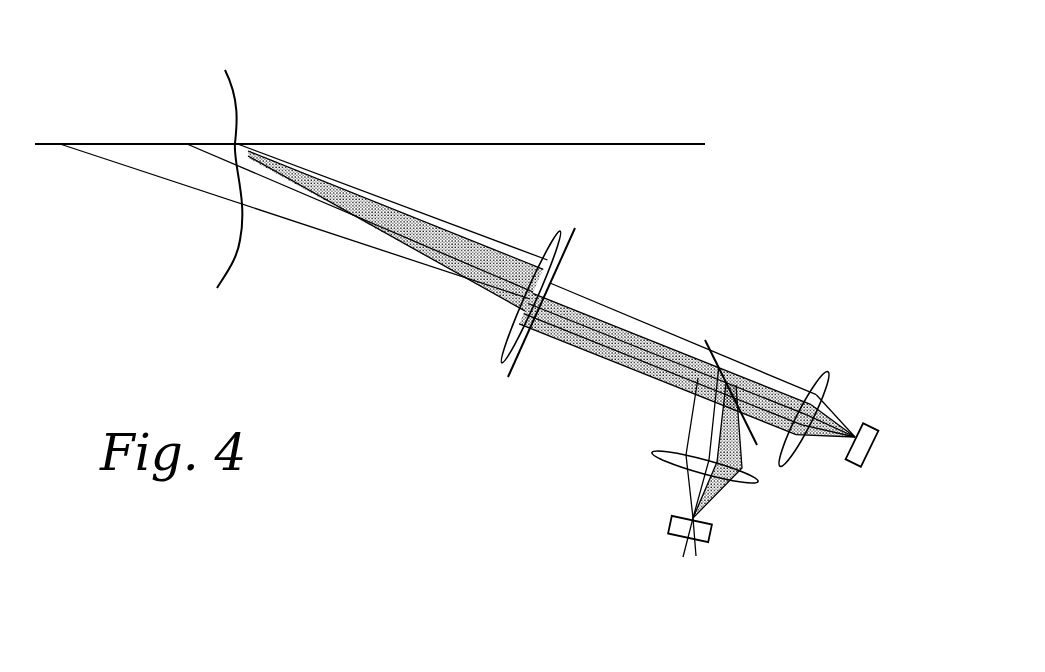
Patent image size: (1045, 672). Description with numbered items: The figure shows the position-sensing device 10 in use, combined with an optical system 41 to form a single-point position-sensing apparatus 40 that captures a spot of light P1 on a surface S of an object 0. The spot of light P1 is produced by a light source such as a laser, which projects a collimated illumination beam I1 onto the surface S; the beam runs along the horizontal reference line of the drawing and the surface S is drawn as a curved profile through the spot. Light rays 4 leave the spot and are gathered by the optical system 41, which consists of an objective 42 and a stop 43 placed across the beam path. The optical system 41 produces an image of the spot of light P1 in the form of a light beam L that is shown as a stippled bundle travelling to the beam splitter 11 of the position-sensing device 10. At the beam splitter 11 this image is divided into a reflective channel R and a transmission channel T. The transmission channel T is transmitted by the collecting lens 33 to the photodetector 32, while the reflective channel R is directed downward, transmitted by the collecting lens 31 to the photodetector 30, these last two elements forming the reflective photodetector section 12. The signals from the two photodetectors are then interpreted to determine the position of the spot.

The object 0 is at (280, 91).
The spot of light P1 is at (236, 143).
The illumination beam I1 is at (494, 144).
The surface S is at (233, 263).
The light rays 4 is at (285, 193).
The light beam L is at (578, 298).
The optical system 41 is at (486, 376).
The objective 42 is at (553, 240).
The stop 43 is at (575, 247).
The position-sensing apparatus 40 is at (848, 279).
The position-sensing device 10 is at (783, 355).
The beam splitter 11 is at (710, 343).
The collecting lens 33 is at (830, 378).
The photodetector 32 is at (867, 447).
The transmission channel T is at (822, 450).
The reflective channel R is at (727, 443).
The collecting lens 31 is at (753, 485).
The photodetector 30 is at (707, 533).
The reflective photodetector section 12 is at (652, 505).